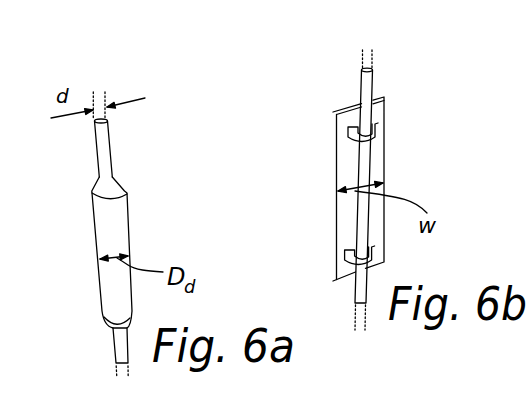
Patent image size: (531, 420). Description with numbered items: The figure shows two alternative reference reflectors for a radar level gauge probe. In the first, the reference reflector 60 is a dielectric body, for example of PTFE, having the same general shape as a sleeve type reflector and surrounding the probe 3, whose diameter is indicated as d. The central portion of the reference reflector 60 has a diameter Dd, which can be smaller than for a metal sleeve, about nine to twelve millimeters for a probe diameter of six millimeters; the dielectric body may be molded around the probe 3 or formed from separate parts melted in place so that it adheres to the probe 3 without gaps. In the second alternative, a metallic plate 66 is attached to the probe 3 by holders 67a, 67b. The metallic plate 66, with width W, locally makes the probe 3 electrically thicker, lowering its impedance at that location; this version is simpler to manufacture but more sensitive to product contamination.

In FIG. 6a, the probe 3 is at (113, 158).
In FIG. 6b, the probe 3 is at (373, 86).
In FIG. 6a, the reference reflector 60 is at (126, 212).
In FIG. 6b, the metallic plate 66 is at (380, 158).
In FIG. 6b, the holder 67a is at (348, 137).
In FIG. 6b, the holder 67b is at (345, 258).